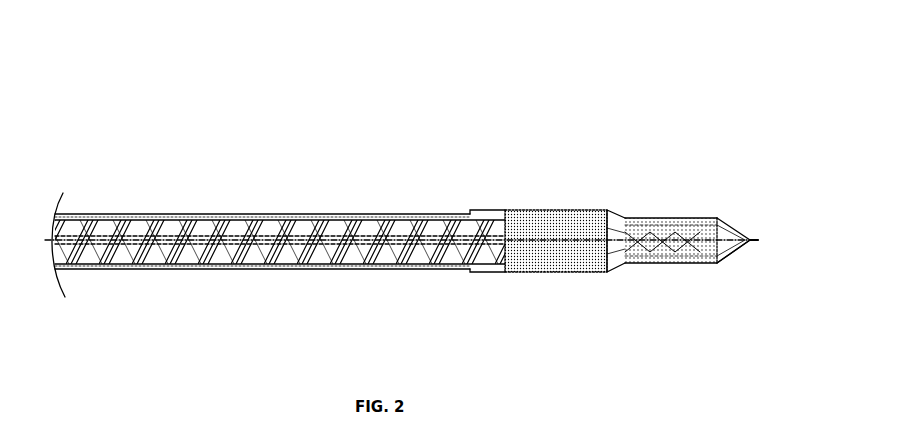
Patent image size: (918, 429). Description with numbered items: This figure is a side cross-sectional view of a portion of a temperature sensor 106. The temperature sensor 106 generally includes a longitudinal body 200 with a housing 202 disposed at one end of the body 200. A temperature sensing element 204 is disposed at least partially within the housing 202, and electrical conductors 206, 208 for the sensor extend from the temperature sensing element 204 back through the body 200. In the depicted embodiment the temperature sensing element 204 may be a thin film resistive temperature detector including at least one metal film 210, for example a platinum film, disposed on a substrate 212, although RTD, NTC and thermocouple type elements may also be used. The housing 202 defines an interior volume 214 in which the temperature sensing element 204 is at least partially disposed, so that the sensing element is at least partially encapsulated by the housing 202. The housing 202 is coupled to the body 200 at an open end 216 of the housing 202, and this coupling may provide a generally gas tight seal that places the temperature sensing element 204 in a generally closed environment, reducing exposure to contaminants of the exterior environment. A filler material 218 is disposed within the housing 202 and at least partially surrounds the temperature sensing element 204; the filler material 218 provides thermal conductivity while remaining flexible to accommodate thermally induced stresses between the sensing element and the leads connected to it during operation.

The temperature sensor 106 is at (150, 119).
The longitudinal body 200 is at (202, 217).
The housing 202 is at (715, 220).
The temperature sensing element 204 is at (647, 217).
The electrical conductor 206 is at (390, 222).
The electrical conductor 208 is at (390, 222).
The metal film 210 is at (657, 244).
The substrate 212 is at (606, 241).
The interior volume 214 is at (508, 216).
The open end 216 is at (468, 270).
The filler material 218 is at (712, 265).